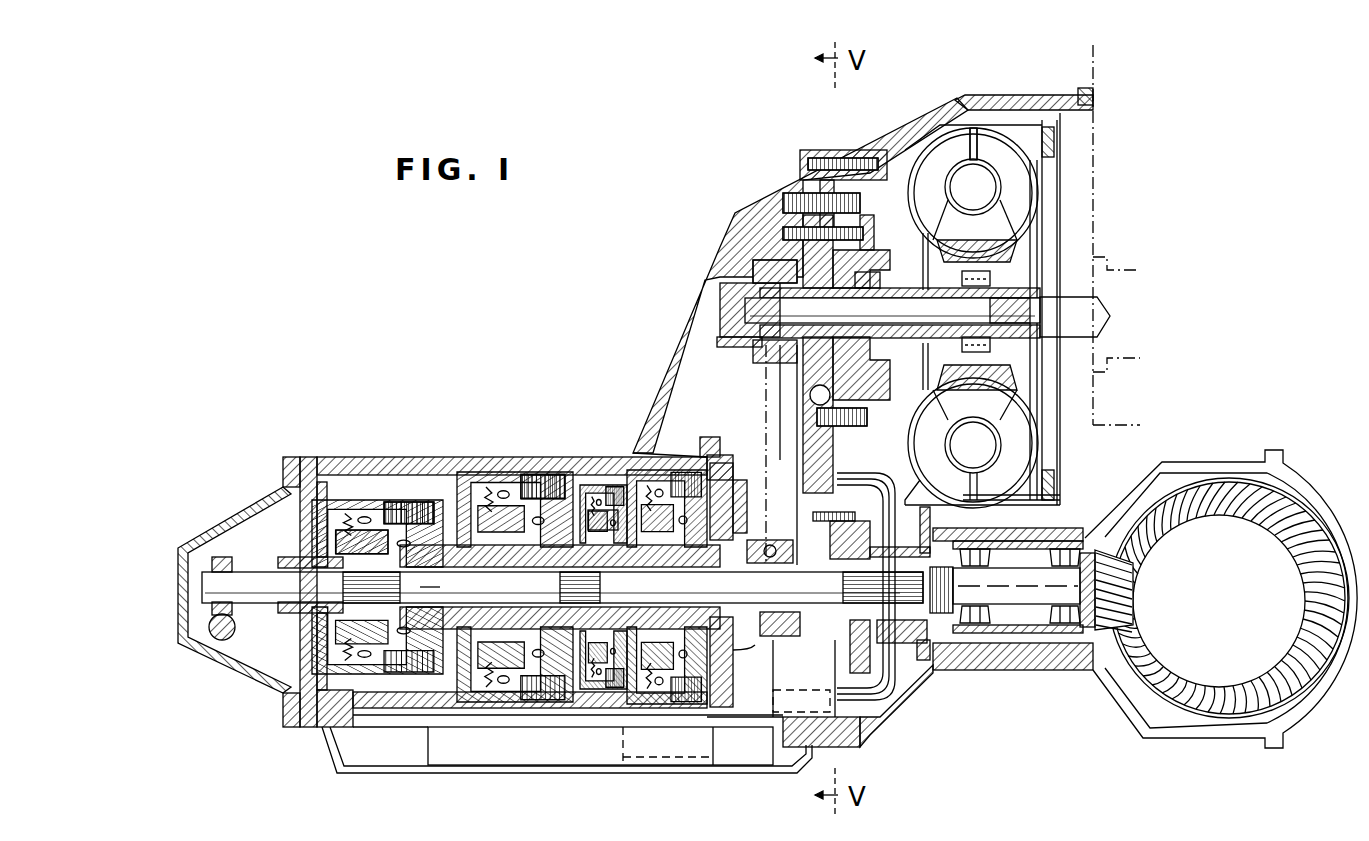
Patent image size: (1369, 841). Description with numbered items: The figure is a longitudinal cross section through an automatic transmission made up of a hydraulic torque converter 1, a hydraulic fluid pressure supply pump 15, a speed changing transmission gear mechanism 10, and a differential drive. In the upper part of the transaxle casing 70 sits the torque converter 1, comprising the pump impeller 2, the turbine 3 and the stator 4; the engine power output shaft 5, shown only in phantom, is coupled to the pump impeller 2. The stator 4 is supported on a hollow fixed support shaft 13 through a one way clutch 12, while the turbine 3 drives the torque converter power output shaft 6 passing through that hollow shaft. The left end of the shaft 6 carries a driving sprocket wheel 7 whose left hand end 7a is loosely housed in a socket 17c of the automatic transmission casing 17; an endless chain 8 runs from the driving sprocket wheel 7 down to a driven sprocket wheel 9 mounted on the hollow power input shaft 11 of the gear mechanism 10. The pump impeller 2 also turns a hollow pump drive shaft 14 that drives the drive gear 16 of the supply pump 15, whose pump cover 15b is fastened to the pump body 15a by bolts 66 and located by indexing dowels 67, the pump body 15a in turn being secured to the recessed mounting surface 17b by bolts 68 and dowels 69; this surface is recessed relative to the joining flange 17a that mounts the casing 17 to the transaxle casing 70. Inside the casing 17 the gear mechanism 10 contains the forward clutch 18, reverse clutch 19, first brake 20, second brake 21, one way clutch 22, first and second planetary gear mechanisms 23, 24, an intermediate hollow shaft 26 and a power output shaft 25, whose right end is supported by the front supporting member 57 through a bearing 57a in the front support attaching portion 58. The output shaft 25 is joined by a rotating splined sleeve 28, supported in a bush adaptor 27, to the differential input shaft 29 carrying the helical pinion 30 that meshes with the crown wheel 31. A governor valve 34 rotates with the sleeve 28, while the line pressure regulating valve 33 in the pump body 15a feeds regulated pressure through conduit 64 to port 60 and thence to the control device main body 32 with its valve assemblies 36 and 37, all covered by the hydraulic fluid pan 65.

The hydraulic torque converter 1 is at (947, 141).
The torque converter pump impeller 2 is at (930, 166).
The torque converter turbine 3 is at (984, 135).
The torque converter stator 4 is at (990, 215).
The power output shaft of internal combustion engine 5 is at (1141, 276).
The hydraulic torque converter power output shaft 6 is at (940, 305).
The driving sprocket wheel 7 is at (765, 356).
The left hand end of driving sprocket wheel 7a is at (720, 306).
The endless chain 8 is at (763, 396).
The driven sprocket wheel 9 is at (786, 632).
The speed changing transmission gear mechanism 10 is at (540, 455).
The speed changing transmission gear mechanism power input shaft 11 is at (778, 574).
The one way clutch 12 is at (990, 280).
The hollow fixed support shaft 13 is at (940, 337).
The hollow hydraulic fluid pressure pump drive shaft 14 is at (918, 290).
The hydraulic fluid pressure supply pump 15 is at (866, 216).
The pump body 15a is at (805, 452).
The pump cover 15b is at (867, 385).
The drive gear 16 is at (862, 272).
The automatic transmission casing 17 is at (480, 470).
The transmission casing joining flange 17a is at (845, 153).
The hydraulic fluid pressure supply pump mounting surface 17b is at (790, 206).
The socket 17c is at (720, 336).
The forward clutch 18 is at (645, 482).
The reverse clutch 19 is at (588, 480).
The first brake 20 is at (414, 498).
The second brake 21 is at (510, 478).
The one way clutch 22 is at (428, 512).
The first planetary gear mechanism 23 is at (602, 505).
The second planetary gear mechanism 24 is at (380, 525).
The power output shaft 25 is at (441, 587).
The intermediate hollow shaft 26 is at (495, 565).
The supporting bush adaptor 27 is at (958, 630).
The rotating splined sleeve 28 is at (894, 620).
The differential mechanism power input shaft 29 is at (1010, 642).
The helically cut differential pinion 30 is at (1136, 600).
The helically cut crown wheel 31 is at (1122, 694).
The main body of hydraulic fluid pressure control device 32 is at (540, 770).
The line hydraulic fluid pressure regulating control valve 33 is at (812, 402).
The governor hydraulic fluid pressure regulating control valve 34 is at (840, 518).
The valve assembly 36 is at (740, 755).
The valve assembly 37 is at (484, 760).
The front power output shaft supporting member 57 is at (762, 518).
The bearing 57a is at (760, 650).
The front support attaching portion 58 is at (712, 466).
The line hydraulic fluid pressure receiving port 60 is at (826, 700).
The line hydraulic fluid pressure conduit 64 is at (893, 702).
The hydraulic fluid pan 65 is at (410, 773).
The bolts 66 is at (860, 420).
The indexing dowels 67 is at (866, 236).
The bolts 68 is at (818, 198).
The indexing dowels 69 is at (785, 233).
The transaxle casing 70 is at (963, 672).